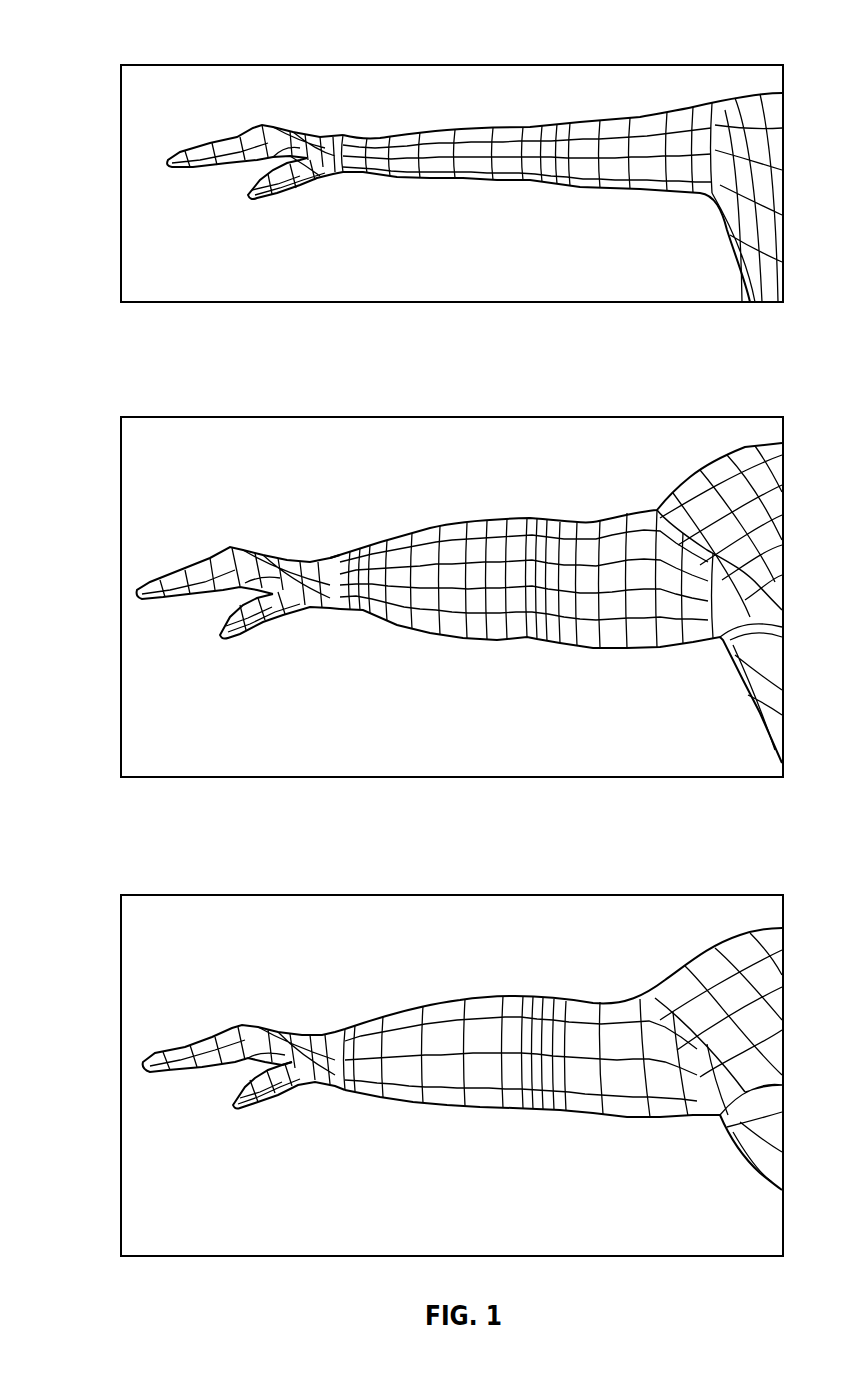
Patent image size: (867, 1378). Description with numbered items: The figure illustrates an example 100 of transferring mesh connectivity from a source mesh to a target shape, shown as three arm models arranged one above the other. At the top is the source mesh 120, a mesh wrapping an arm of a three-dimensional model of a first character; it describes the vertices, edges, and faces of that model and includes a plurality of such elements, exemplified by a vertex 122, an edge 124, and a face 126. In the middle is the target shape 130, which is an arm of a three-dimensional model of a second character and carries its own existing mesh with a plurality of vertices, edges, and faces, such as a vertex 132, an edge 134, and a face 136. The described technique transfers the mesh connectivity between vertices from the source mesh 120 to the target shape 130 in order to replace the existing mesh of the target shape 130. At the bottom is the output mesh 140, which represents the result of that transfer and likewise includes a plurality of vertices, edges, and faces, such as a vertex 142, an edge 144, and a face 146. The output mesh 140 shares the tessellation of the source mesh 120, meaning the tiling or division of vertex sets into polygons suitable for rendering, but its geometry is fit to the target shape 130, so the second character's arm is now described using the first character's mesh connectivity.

The example 100 is at (116, 21).
The source mesh 120 is at (740, 64).
The vertex 122 is at (413, 149).
The edge 124 is at (474, 173).
The face 126 is at (588, 142).
The target shape 130 is at (740, 416).
The vertex 132 is at (388, 557).
The edge 134 is at (425, 616).
The face 136 is at (608, 548).
The output mesh 140 is at (740, 896).
The vertex 142 is at (377, 1038).
The edge 144 is at (457, 1090).
The face 146 is at (573, 1033).